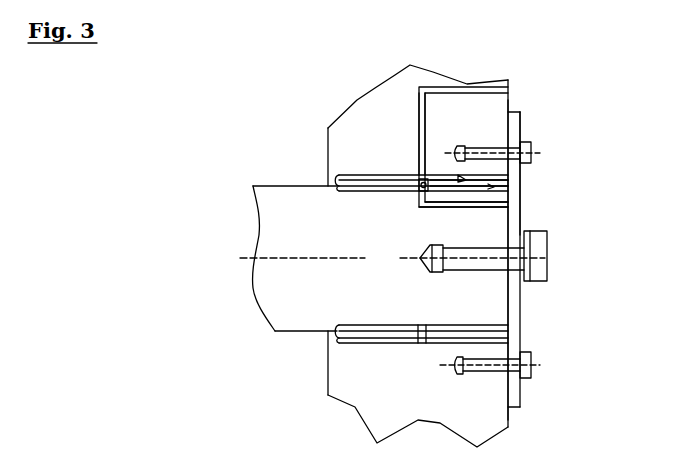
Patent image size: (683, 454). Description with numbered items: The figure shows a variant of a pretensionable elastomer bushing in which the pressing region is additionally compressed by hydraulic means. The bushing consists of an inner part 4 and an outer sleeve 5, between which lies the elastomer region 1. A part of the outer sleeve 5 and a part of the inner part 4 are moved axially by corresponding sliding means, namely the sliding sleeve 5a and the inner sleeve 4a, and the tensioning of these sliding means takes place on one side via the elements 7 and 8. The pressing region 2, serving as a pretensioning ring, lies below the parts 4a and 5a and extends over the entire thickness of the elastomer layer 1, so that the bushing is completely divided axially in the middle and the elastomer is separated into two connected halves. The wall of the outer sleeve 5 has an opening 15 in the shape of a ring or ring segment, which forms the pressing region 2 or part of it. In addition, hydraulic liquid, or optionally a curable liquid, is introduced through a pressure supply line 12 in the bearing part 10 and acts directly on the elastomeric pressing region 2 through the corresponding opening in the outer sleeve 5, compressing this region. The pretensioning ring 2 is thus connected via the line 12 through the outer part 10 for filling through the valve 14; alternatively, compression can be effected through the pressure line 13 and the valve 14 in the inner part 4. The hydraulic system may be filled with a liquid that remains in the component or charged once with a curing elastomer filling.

The elastomer region 1 is at (524, 200).
The pressing region 2 is at (420, 187).
The inner part 4 is at (317, 302).
The inner sleeve 4a is at (357, 192).
The outer sleeve 5 is at (357, 175).
The sliding sleeve 5a is at (462, 178).
The tensioning element 7 is at (526, 152).
The tensioning element 8 is at (515, 123).
The bearing part 10 is at (397, 117).
The pressure supply line 12 is at (433, 90).
The pressure line 13 is at (436, 214).
The valve 14 is at (510, 90).
The opening 15 is at (418, 175).